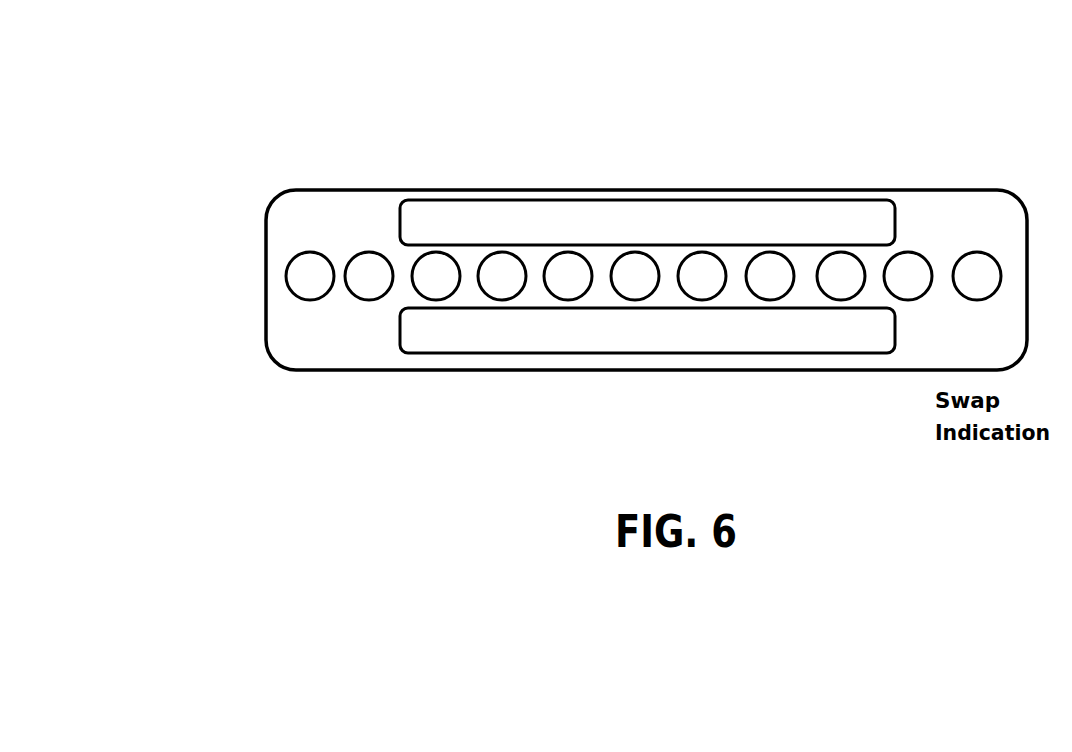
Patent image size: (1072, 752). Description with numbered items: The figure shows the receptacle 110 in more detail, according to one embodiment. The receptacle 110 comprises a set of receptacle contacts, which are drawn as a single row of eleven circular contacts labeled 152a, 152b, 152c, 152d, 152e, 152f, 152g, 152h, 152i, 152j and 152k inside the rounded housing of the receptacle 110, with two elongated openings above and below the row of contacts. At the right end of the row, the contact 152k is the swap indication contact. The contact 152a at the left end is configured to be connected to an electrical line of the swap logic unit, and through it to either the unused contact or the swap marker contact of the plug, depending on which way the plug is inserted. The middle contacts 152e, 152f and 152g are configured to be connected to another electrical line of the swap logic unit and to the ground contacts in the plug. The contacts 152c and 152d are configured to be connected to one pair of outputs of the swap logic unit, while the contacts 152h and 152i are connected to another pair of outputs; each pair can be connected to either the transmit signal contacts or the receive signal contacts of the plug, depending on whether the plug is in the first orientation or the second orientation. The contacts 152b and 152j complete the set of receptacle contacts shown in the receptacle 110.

The receptacle 110 is at (266, 268).
The receptacle contact 152a is at (300, 252).
The receptacle contact 152b is at (368, 252).
The receptacle contact 152c is at (434, 252).
The receptacle contact 152d is at (505, 252).
The receptacle contact 152e is at (568, 252).
The receptacle contact 152f is at (635, 252).
The receptacle contact 152g is at (700, 252).
The receptacle contact 152h is at (773, 252).
The receptacle contact 152i is at (840, 252).
The receptacle contact 152j is at (913, 255).
The swap indication contact 152k is at (982, 252).